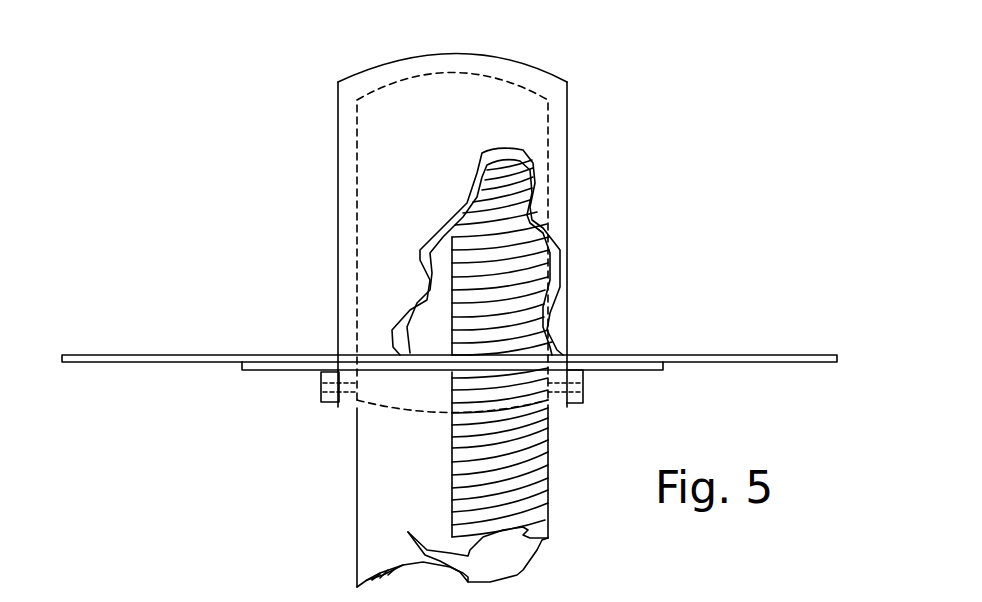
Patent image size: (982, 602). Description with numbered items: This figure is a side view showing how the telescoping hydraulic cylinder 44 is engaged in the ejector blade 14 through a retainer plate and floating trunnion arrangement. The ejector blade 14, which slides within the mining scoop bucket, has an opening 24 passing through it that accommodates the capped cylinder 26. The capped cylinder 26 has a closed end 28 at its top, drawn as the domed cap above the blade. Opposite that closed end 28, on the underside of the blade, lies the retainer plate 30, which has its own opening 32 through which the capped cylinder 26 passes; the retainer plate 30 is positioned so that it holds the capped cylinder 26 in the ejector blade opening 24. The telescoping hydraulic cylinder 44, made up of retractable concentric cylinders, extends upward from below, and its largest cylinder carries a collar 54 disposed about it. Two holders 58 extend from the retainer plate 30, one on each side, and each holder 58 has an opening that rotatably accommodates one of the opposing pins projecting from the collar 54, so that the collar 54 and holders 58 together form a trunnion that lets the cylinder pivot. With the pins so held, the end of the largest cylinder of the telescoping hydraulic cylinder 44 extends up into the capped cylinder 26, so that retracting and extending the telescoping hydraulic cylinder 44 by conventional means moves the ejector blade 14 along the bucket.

The ejector blade 14 is at (723, 353).
The opening 24 is at (556, 407).
The capped cylinder 26 is at (568, 180).
The closed end 28 is at (540, 71).
The retainer plate 30 is at (271, 371).
The opening 32 is at (357, 355).
The telescoping hydraulic cylinder 44 is at (357, 517).
The collar 54 is at (583, 385).
The holders 58 is at (332, 403).